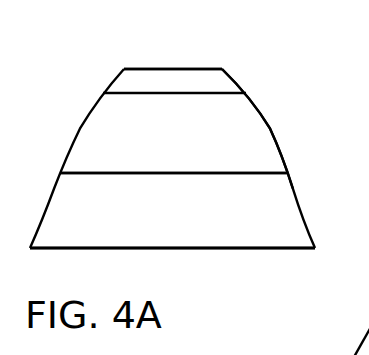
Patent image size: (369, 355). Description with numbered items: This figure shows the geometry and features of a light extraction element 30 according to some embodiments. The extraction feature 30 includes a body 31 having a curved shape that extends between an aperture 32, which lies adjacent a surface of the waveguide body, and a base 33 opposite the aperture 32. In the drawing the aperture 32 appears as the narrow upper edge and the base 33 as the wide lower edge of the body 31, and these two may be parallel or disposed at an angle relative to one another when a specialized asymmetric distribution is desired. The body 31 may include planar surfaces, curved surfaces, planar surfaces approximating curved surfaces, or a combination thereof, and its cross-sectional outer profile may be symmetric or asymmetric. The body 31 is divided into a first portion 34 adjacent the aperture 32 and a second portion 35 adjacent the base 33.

The light extraction element 30 is at (317, 93).
The body 31 is at (280, 138).
The aperture 32 is at (210, 92).
The base 33 is at (257, 249).
The first portion 34 is at (143, 150).
The second portion 35 is at (133, 222).